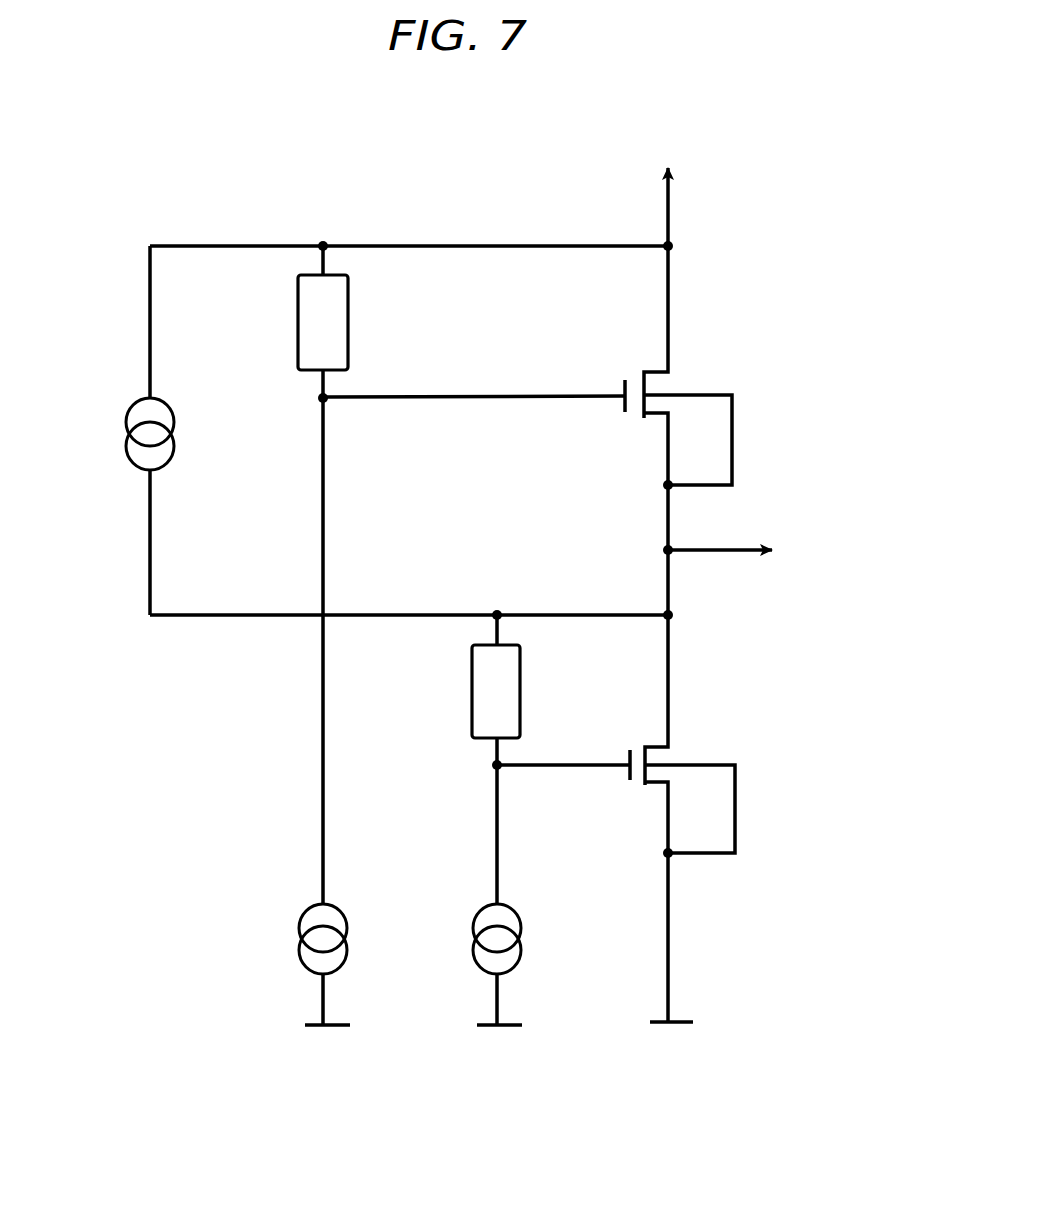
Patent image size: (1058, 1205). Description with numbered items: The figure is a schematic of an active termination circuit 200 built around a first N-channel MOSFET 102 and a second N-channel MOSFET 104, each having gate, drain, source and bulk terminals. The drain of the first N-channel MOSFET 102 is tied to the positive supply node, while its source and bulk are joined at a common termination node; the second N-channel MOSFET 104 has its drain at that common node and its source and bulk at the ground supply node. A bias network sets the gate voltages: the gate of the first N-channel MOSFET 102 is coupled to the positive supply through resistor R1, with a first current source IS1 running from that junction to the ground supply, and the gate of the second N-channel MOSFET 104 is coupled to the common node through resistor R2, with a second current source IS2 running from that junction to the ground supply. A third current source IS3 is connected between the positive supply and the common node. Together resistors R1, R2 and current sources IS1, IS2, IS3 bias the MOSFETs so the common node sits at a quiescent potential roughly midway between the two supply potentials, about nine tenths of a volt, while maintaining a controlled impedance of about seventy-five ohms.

The active termination circuit 200 is at (249, 213).
The first N-channel MOSFET 102 is at (726, 318).
The second N-channel MOSFET 104 is at (738, 886).
The resistor R1 is at (323, 322).
The resistor R2 is at (496, 691).
The first current source IS1 is at (307, 914).
The second current source IS2 is at (480, 914).
The third current source IS3 is at (133, 410).